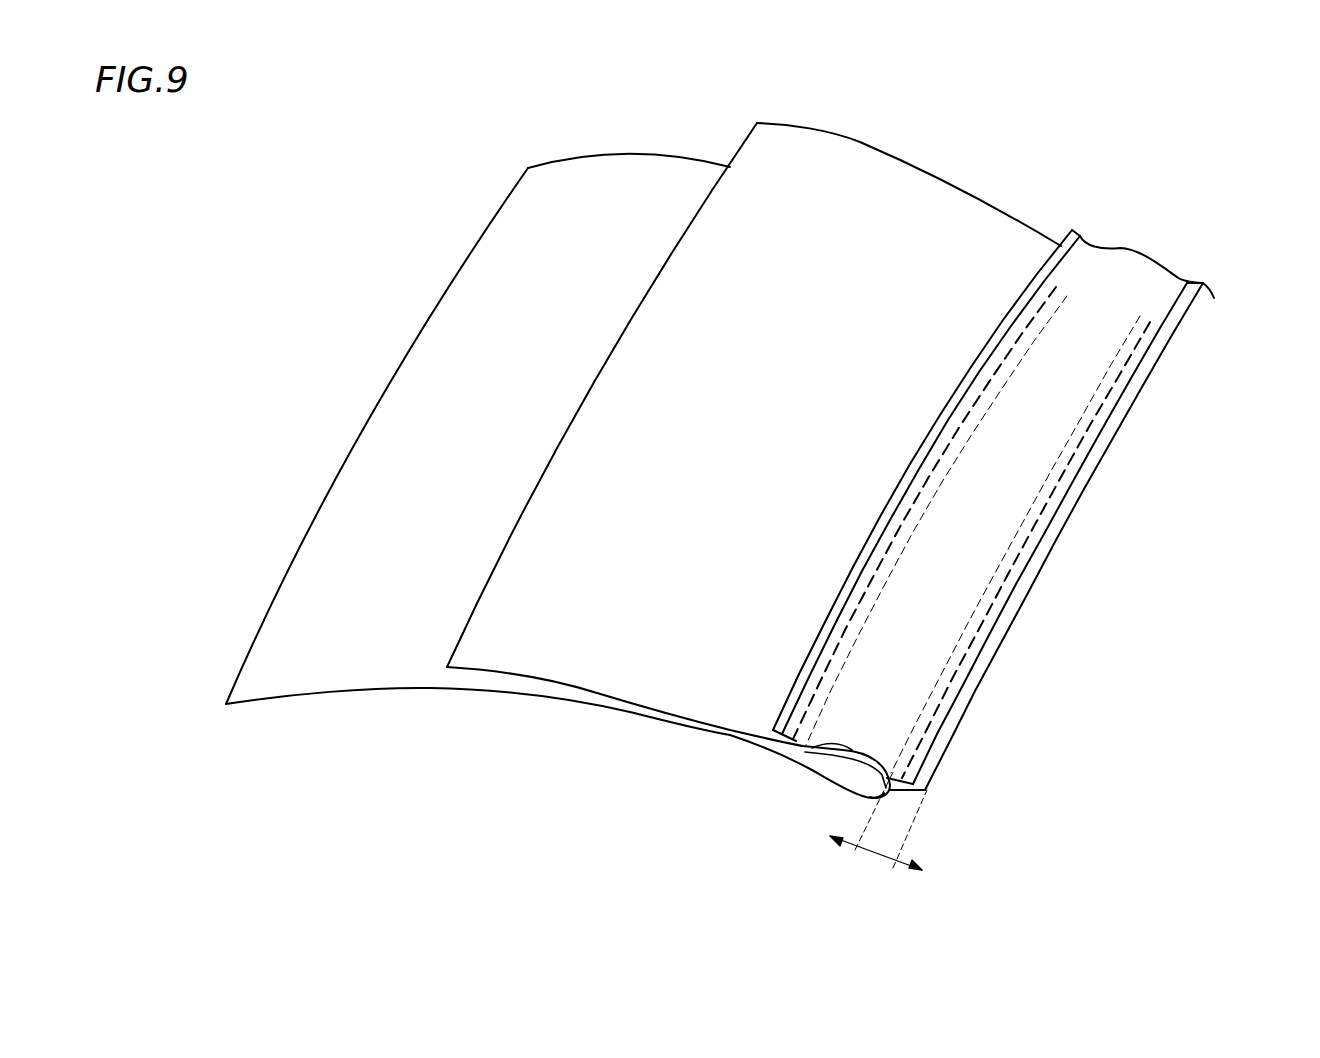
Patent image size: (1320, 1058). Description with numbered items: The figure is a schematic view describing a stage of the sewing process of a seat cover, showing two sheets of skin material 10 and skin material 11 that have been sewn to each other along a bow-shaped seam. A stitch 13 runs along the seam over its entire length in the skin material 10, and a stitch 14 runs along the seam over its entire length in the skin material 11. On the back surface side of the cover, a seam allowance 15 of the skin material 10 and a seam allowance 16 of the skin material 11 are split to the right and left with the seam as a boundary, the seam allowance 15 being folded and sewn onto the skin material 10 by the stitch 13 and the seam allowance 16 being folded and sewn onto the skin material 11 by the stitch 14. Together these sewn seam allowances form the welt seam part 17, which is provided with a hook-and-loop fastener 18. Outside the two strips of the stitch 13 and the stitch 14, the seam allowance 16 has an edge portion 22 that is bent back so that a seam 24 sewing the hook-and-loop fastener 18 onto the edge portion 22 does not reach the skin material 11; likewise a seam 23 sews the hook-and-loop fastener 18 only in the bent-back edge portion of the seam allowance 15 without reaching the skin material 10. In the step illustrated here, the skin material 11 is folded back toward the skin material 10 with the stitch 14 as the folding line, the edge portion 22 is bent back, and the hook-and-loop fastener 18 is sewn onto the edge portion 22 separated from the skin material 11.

The skin material 10 is at (828, 183).
The skin material 11 is at (362, 650).
The stitch 13 is at (1037, 436).
The stitch 14 is at (1128, 348).
The seam allowance 15 is at (1064, 228).
The seam allowance 16 is at (1091, 478).
The welt seam part 17 is at (1118, 95).
The hook-and-loop fastener 18 is at (840, 722).
The edge portion 22 is at (873, 850).
The seam 23 is at (830, 652).
The seam 24 is at (957, 668).